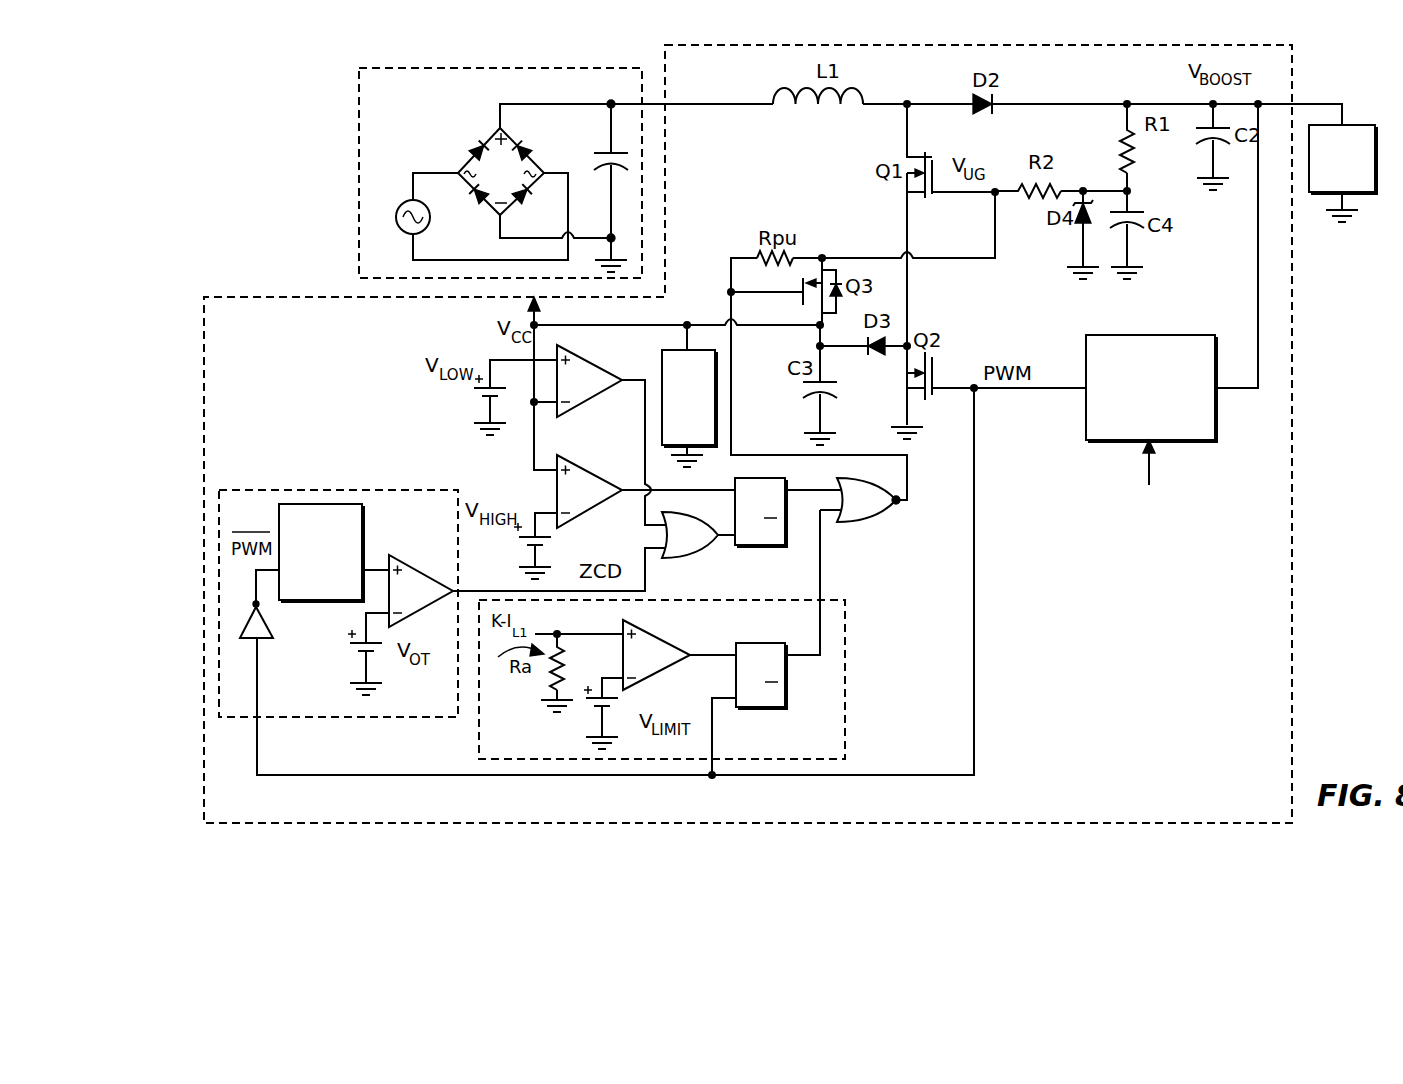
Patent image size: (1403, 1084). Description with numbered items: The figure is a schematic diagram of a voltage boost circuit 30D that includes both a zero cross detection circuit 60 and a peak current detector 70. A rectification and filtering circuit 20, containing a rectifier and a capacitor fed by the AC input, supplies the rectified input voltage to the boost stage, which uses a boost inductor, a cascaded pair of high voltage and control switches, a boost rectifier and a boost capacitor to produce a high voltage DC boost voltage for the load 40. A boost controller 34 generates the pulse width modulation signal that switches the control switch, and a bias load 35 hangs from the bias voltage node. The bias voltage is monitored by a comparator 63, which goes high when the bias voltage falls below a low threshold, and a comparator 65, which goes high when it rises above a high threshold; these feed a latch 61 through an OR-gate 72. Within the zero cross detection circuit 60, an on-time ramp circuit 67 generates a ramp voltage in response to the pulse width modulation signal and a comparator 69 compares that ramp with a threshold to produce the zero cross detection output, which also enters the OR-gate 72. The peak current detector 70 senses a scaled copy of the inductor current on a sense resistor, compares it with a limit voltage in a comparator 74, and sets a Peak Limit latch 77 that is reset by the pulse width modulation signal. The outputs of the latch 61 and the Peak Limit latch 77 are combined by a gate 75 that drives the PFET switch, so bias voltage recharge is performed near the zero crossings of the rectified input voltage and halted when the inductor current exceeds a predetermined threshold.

The rectification and filtering circuit 20 is at (492, 66).
The voltage boost circuit 30D is at (1292, 467).
The boost controller 34 is at (1139, 419).
The bias load 35 is at (678, 431).
The load 40 is at (1331, 182).
The zero cross detection circuit 60 is at (338, 490).
The latch 61 is at (775, 545).
The comparator 63 is at (606, 392).
The comparator 65 is at (606, 502).
The on-time ramp circuit 67 is at (310, 588).
The comparator 69 is at (426, 604).
The peak current detector 70 is at (845, 686).
The OR-gate 72 is at (683, 558).
The comparator 74 is at (661, 669).
The NOR-gate 75 is at (862, 522).
The Peak Limit latch 77 is at (750, 707).